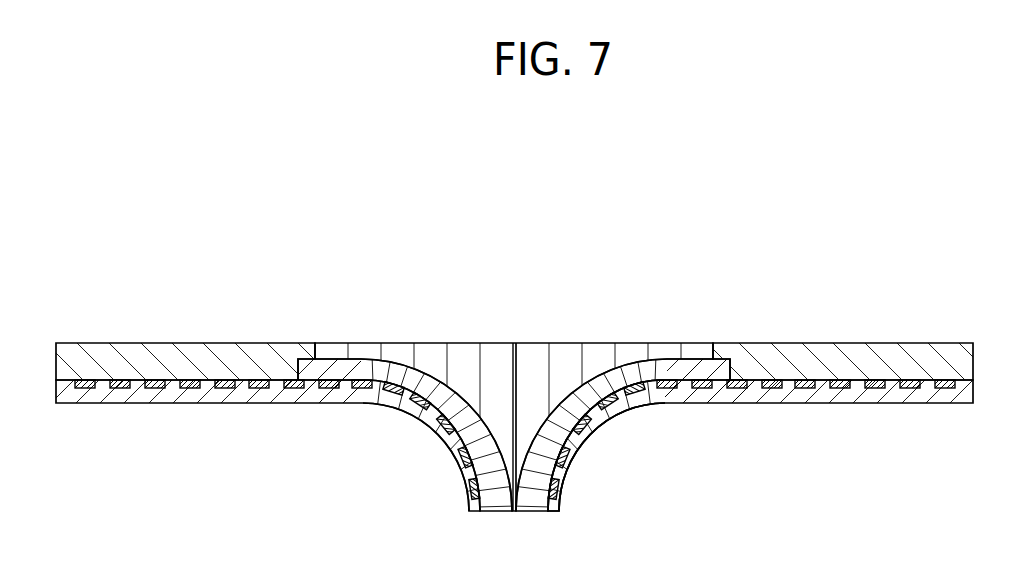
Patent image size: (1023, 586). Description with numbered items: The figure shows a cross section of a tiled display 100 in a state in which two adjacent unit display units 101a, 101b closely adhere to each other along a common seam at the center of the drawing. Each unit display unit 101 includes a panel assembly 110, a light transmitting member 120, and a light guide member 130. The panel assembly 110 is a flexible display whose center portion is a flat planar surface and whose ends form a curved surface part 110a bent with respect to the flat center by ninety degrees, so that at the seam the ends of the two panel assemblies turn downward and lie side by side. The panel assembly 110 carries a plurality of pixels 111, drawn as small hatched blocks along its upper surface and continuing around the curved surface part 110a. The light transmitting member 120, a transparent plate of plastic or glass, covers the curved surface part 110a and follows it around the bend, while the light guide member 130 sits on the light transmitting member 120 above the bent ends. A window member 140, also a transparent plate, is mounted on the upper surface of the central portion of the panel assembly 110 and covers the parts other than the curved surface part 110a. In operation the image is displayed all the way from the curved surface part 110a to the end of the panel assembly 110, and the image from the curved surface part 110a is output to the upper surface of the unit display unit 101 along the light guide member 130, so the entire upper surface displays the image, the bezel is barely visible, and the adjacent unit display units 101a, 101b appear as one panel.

The tiled display 100 is at (511, 372).
The unit display unit 101 is at (482, 389).
The unit display unit 101a is at (330, 389).
The unit display unit 101b is at (666, 390).
The panel assembly 110 is at (521, 430).
The curved surface part 110a is at (637, 413).
The pixel 111 is at (413, 410).
The light transmitting member 120 is at (536, 457).
The light guide member 130 is at (514, 400).
The window member 140 is at (511, 346).